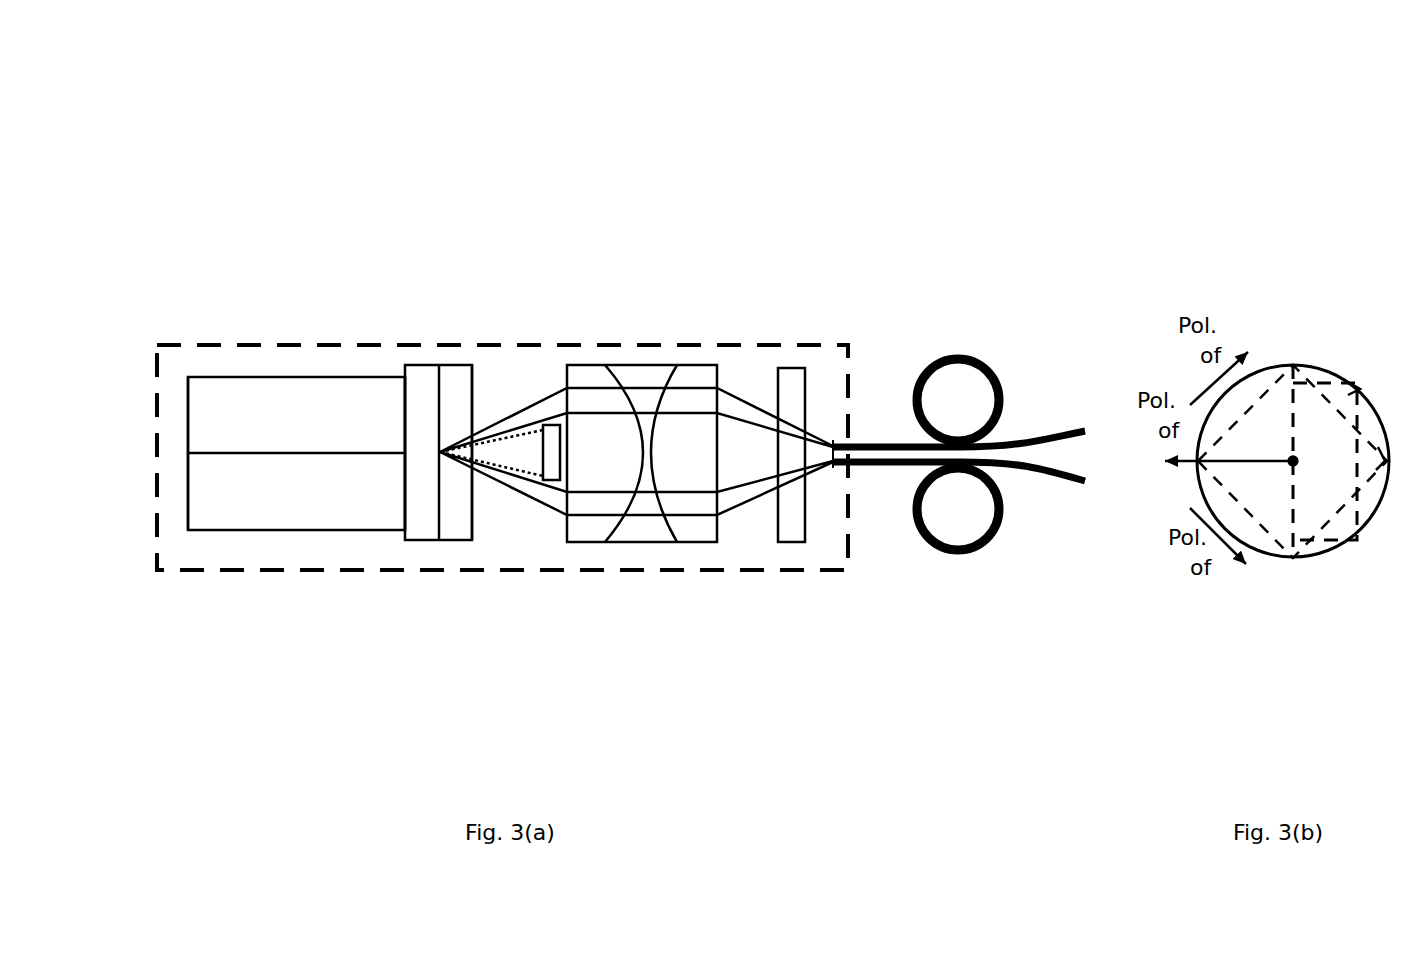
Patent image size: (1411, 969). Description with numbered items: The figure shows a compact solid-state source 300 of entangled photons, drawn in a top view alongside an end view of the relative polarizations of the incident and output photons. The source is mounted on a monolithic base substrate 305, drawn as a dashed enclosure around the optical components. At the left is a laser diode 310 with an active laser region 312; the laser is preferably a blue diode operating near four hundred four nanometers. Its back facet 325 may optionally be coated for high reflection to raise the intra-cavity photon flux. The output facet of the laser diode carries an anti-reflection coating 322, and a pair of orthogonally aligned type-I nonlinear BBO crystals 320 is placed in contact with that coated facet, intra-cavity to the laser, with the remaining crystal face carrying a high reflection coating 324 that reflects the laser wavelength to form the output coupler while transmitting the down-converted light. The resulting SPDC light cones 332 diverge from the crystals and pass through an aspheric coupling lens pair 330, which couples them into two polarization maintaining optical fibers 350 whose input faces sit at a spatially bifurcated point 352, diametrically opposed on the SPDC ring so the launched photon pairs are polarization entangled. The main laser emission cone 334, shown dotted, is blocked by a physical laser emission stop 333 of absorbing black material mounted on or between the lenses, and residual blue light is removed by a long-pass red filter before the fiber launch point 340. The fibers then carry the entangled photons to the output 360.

The compact solid-state source 300 is at (382, 655).
The monolithic base substrate 305 is at (421, 580).
The laser diode 310 is at (224, 534).
The active laser region 312 is at (297, 448).
The BBO crystals 320 is at (423, 362).
The anti-reflection coating 322 is at (402, 479).
The high reflection coating 324 is at (474, 525).
The back facet 325 is at (181, 420).
The aspheric coupling lens pair 330 is at (612, 547).
The SPDC light cones 332 is at (595, 380).
The laser emission stop 333 is at (548, 422).
The main laser emission cone 334 is at (527, 476).
The fiber launch point 340 is at (809, 535).
The polarization maintaining optical fibers 350 is at (998, 363).
The spatially bifurcated point 352 is at (831, 438).
The output 360 is at (1087, 492).